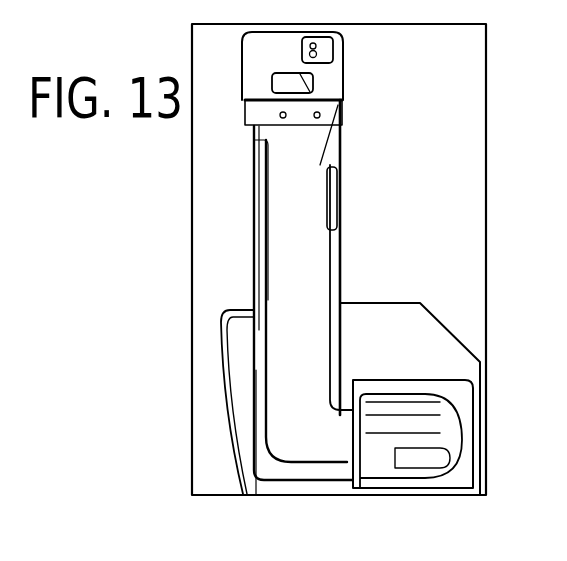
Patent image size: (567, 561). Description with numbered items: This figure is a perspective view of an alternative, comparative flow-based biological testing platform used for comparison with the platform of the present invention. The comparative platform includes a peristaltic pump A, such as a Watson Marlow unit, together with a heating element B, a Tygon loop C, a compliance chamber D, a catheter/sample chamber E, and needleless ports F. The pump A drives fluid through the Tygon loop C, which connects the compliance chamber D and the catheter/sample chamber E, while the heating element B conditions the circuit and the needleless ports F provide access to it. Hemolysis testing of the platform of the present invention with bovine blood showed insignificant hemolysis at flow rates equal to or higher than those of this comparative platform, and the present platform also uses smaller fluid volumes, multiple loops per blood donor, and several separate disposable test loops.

The peristaltic pump A is at (367, 442).
The heating element B is at (310, 337).
The Tygon loop C is at (340, 276).
The compliance chamber D is at (340, 198).
The catheter/sample chamber E is at (262, 160).
The needleless ports F is at (245, 122).